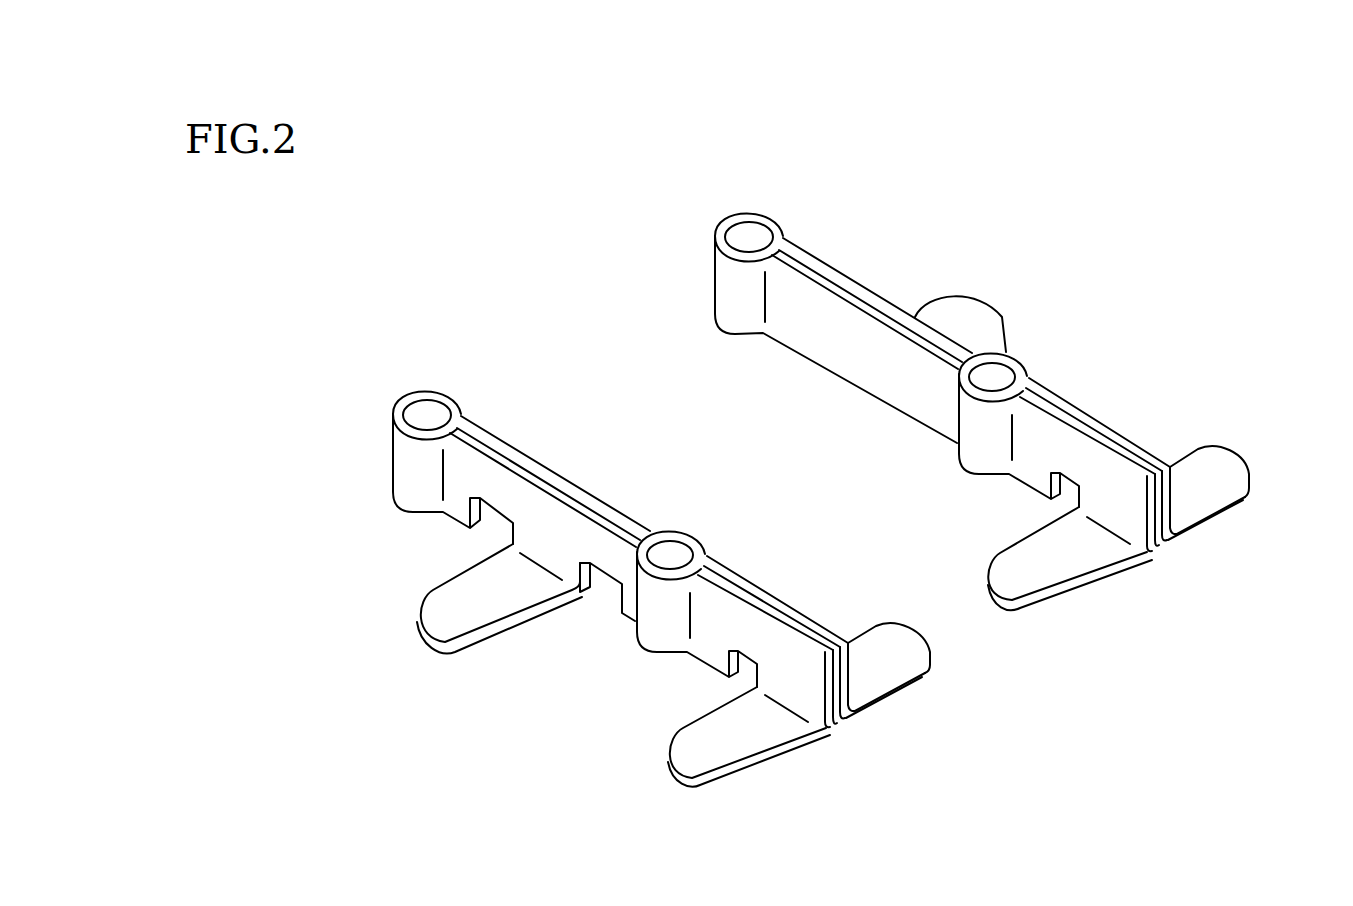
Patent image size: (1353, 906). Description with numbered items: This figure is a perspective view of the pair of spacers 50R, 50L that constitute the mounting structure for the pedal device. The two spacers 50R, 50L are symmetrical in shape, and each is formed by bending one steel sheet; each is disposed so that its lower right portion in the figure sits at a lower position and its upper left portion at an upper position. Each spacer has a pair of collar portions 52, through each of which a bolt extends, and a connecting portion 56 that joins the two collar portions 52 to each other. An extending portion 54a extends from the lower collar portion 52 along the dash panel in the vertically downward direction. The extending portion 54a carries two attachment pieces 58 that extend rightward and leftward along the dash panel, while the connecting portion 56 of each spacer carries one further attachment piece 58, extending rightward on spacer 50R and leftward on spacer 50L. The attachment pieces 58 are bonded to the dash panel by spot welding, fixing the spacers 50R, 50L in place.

The spacer 50L is at (406, 262).
The spacer 50R is at (767, 78).
The collar portion 52 is at (436, 391).
The extending portion 54a is at (768, 600).
The connecting portion 56 is at (550, 476).
The attachment piece 58 is at (500, 614).